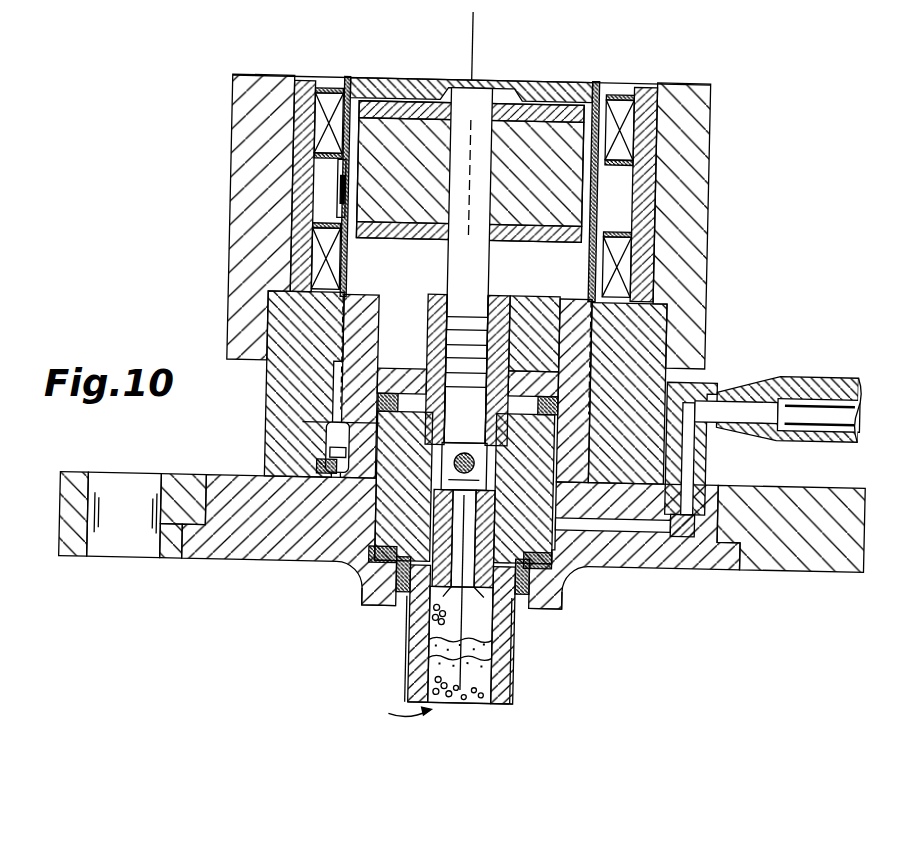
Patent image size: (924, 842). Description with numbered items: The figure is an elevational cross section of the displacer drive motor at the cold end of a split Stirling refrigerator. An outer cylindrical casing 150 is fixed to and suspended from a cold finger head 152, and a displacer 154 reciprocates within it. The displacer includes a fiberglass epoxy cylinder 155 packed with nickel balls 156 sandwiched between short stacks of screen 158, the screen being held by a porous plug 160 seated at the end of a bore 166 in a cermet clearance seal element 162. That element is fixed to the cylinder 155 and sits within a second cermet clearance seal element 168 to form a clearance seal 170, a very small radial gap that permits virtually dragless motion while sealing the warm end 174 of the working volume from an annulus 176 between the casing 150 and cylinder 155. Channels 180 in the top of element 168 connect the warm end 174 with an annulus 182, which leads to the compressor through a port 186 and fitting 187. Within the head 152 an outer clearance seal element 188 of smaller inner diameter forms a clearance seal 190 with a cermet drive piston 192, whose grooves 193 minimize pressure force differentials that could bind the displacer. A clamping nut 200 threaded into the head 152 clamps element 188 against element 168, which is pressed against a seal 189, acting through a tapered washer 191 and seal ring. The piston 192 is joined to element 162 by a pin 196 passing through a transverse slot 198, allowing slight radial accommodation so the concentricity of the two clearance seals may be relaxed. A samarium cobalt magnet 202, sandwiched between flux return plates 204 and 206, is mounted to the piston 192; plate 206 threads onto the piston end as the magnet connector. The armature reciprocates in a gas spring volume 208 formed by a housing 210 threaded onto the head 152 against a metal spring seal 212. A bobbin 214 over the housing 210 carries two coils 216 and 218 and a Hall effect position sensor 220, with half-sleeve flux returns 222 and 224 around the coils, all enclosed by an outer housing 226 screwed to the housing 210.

The outer cylindrical casing 150 is at (518, 665).
The cold finger head 152 is at (677, 567).
The displacer 154 is at (399, 702).
The fiberglass epoxy cylinder 155 is at (503, 685).
The nickel balls 156 is at (412, 667).
The screen 158 is at (478, 652).
The porous plug 160 is at (475, 625).
The cermet clearance seal element 162 is at (412, 626).
The bore 166 is at (548, 600).
The second cermet clearance seal element 168 is at (405, 603).
The clearance seal 170 is at (360, 577).
The warm end 174 is at (335, 415).
The annulus 176 is at (510, 698).
The channels 180 is at (382, 484).
The annulus 182 is at (373, 520).
The port 186 is at (632, 523).
The fitting 187 is at (705, 462).
The outer clearance seal element 188 is at (503, 298).
The seal 189 is at (560, 565).
The clearance seal 190 is at (490, 298).
The tapered washer 191 is at (660, 345).
The cermet drive piston 192 is at (455, 262).
The grooves 193 is at (458, 333).
The pin 196 is at (470, 485).
The transverse slot 198 is at (400, 532).
The clamping nut 200 is at (550, 297).
The samarium cobalt magnet 202 is at (562, 130).
The flux return plate 204 is at (402, 232).
The flux return plate 206 is at (420, 98).
The gas spring volume 208 is at (390, 280).
The housing 210 is at (530, 86).
The metal spring seal 212 is at (323, 470).
The bobbin 214 is at (340, 92).
The coil 216 is at (322, 120).
The coil 218 is at (318, 266).
The Hall effect position sensor 220 is at (337, 192).
The flux return 222 is at (302, 93).
The flux return 224 is at (642, 104).
The outer housing 226 is at (245, 95).